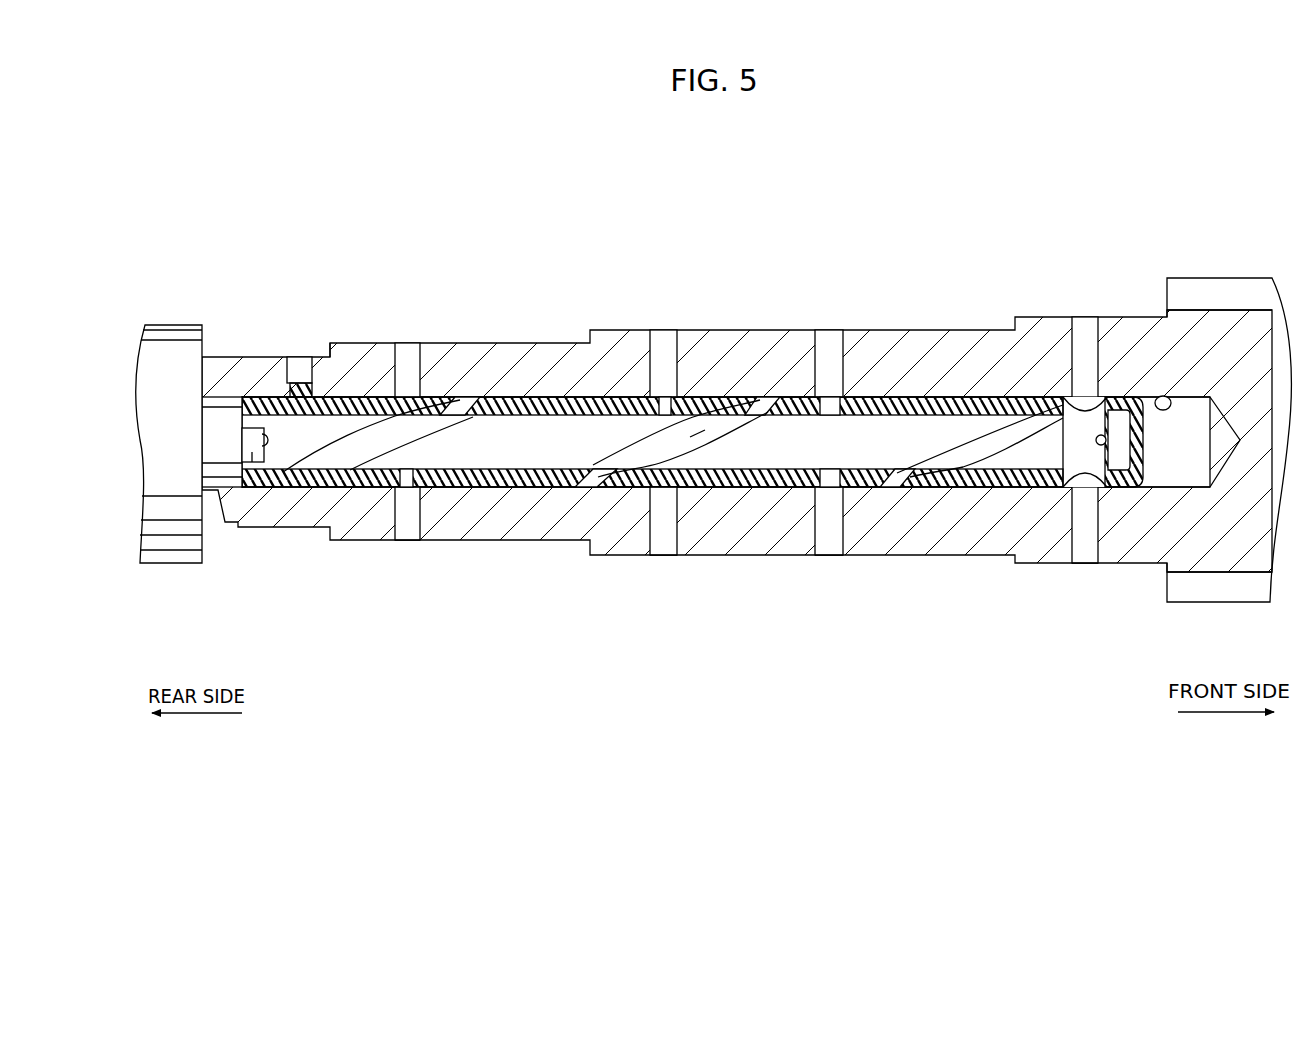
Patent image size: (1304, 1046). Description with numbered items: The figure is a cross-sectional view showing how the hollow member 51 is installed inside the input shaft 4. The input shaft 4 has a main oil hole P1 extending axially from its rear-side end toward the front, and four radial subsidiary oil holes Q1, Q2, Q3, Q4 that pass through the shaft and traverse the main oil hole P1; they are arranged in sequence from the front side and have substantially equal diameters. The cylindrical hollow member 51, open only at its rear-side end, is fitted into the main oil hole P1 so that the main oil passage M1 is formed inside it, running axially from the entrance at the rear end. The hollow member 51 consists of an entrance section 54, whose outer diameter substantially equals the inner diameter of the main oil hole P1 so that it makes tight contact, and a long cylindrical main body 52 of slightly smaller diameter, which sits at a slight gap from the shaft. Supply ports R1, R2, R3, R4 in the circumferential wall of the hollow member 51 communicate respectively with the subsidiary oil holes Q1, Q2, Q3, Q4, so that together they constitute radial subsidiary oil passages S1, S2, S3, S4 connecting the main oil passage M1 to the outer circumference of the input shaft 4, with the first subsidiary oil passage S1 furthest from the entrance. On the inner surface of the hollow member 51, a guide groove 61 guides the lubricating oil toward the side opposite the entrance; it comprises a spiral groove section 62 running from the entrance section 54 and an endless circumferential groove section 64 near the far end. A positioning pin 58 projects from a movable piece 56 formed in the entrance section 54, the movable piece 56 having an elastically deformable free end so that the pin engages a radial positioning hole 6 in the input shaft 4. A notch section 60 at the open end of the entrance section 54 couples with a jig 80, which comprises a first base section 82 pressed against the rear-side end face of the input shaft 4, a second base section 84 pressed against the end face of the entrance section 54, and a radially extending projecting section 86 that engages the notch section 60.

The input shaft 4 is at (1208, 278).
The positioning hole 6 is at (298, 357).
The hollow member 51 is at (935, 392).
The cylindrical main body 52 is at (735, 490).
The entrance section 54 is at (297, 490).
The movable piece 56 is at (355, 357).
The positioning pin 58 is at (290, 357).
The notch section 60 is at (262, 447).
The guide groove 61 is at (630, 458).
The spiral groove section 62 is at (700, 432).
The endless circumferential groove section 64 is at (1106, 441).
The jig 80 is at (172, 316).
The first base section 82 is at (165, 565).
The second base section 84 is at (220, 524).
The projecting section 86 is at (252, 455).
The first subsidiary oil hole Q1 is at (1083, 330).
The second subsidiary oil hole Q2 is at (825, 340).
The third subsidiary oil hole Q3 is at (660, 340).
The fourth subsidiary oil hole Q4 is at (407, 345).
The first supply port R1 is at (1075, 397).
The second supply port R2 is at (835, 474).
The third supply port R3 is at (667, 415).
The fourth supply port R4 is at (413, 468).
The first subsidiary oil passage S1 is at (1085, 569).
The second subsidiary oil passage S2 is at (830, 561).
The third subsidiary oil passage S3 is at (661, 561).
The fourth subsidiary oil passage S4 is at (407, 548).
The main oil passage M1 is at (505, 452).
The main oil hole P1 is at (1175, 392).